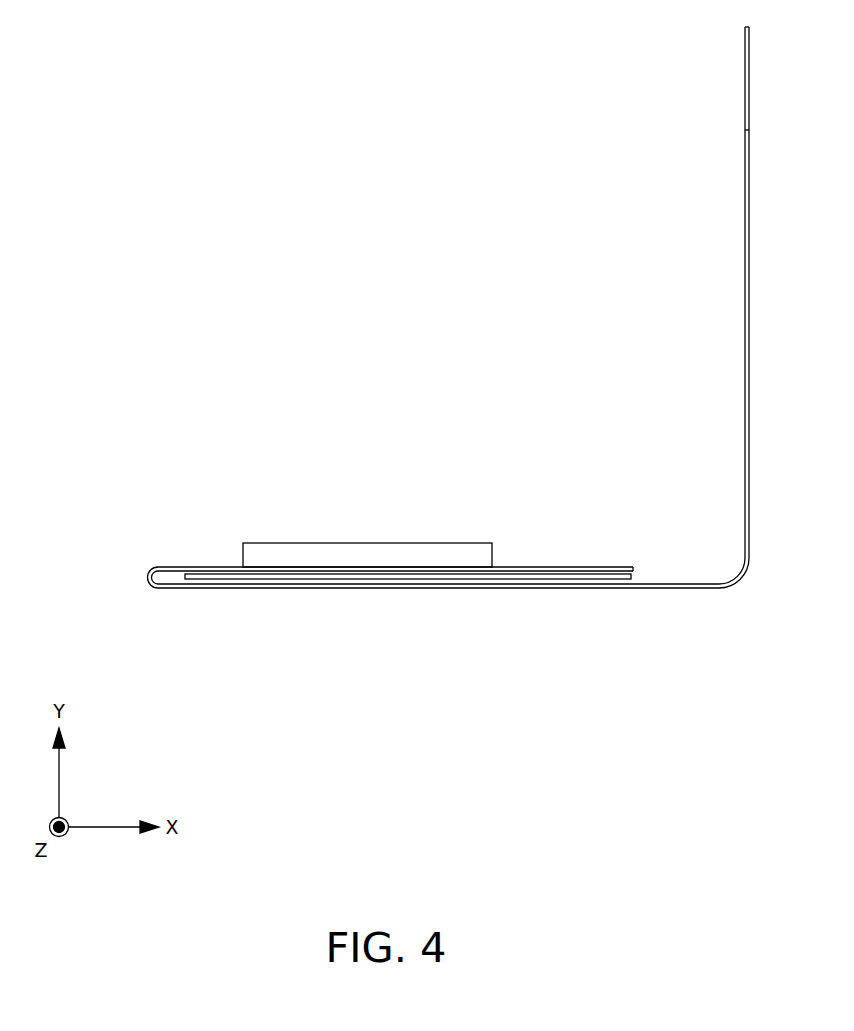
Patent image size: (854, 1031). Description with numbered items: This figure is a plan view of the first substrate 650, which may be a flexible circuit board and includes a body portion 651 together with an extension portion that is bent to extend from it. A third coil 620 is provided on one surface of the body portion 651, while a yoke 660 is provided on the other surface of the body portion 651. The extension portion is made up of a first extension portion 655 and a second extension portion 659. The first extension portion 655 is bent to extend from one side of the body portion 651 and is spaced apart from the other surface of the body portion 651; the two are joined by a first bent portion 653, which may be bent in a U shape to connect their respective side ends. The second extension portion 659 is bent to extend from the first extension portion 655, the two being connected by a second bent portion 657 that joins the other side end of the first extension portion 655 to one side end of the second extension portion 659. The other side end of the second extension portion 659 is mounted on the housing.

The first substrate 650 is at (262, 56).
The body portion 651 is at (181, 570).
The first bent portion 653 is at (147, 581).
The first extension portion 655 is at (435, 590).
The second bent portion 657 is at (740, 579).
The second extension portion 659 is at (744, 239).
The yoke 660 is at (324, 577).
The third coil 620 is at (440, 549).